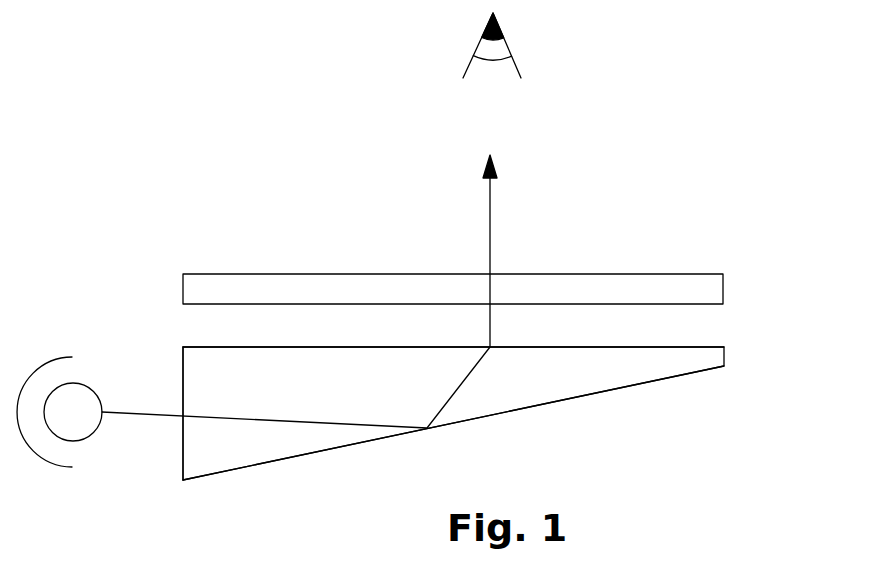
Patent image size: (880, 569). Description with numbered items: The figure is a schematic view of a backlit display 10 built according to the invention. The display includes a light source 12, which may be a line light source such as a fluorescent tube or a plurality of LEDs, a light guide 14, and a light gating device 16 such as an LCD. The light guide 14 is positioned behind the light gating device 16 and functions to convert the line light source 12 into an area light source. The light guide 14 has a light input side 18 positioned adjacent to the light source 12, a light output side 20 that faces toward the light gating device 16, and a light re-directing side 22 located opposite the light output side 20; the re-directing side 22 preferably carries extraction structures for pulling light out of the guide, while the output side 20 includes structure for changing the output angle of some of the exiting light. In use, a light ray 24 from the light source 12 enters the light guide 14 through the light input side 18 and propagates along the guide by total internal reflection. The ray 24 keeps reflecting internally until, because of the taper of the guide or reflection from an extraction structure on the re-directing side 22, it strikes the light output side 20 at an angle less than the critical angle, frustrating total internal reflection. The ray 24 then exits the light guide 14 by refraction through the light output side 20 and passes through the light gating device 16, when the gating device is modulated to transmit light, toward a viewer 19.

The backlit display 10 is at (218, 221).
The light source 12 is at (80, 441).
The light guide 14 is at (245, 468).
The light gating device 16 is at (632, 274).
The light input side 18 is at (182, 460).
The viewer 19 is at (505, 38).
The light output side 20 is at (690, 347).
The light re-directing side 22 is at (547, 407).
The light ray 24 is at (328, 425).